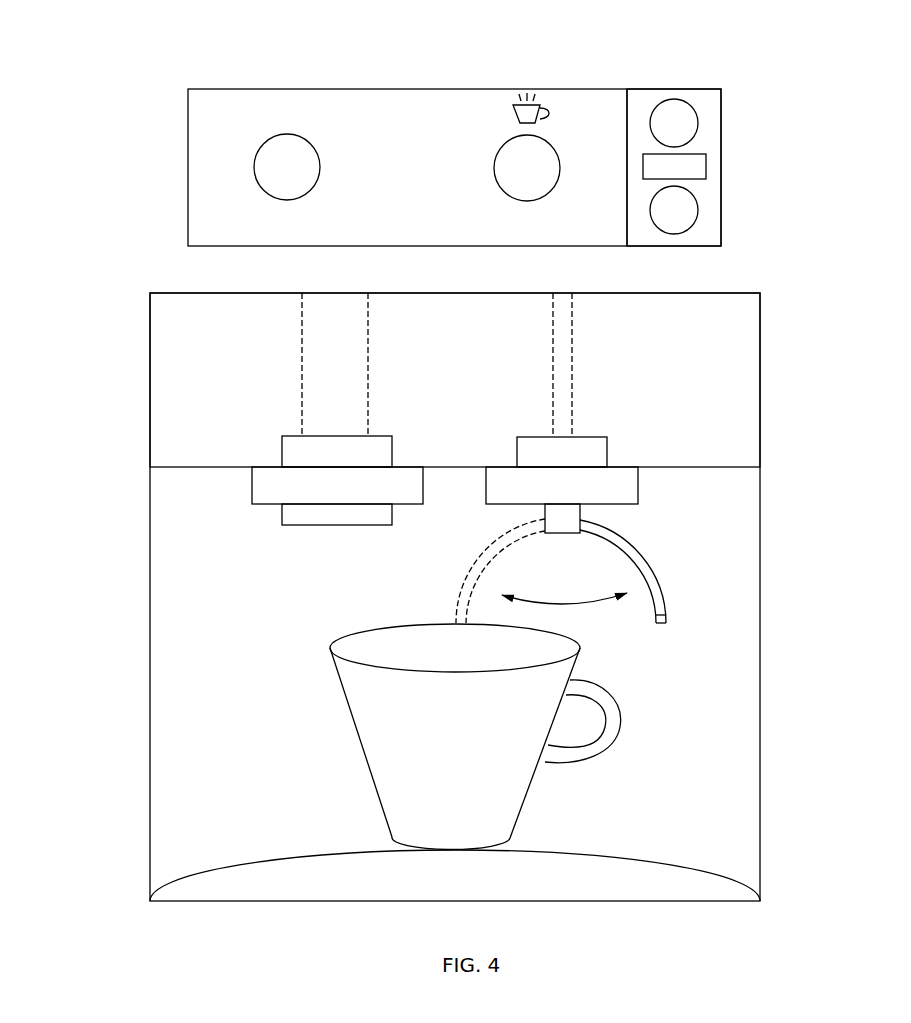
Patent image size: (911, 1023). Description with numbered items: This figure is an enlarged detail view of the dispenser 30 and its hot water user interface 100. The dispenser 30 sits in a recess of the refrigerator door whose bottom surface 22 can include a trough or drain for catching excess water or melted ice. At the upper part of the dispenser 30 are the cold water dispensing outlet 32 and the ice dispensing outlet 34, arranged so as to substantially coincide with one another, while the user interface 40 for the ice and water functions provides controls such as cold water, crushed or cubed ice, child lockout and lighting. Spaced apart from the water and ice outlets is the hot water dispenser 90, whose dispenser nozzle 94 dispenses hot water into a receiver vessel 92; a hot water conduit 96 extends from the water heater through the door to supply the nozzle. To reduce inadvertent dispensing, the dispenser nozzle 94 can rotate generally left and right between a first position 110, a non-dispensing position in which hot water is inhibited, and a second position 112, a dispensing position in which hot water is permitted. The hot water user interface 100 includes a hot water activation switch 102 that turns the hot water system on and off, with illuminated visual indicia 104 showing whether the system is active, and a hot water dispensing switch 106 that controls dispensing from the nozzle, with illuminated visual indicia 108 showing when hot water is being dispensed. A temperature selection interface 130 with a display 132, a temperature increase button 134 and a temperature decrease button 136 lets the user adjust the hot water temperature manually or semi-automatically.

The bottom surface 22 is at (277, 880).
The dispenser 30 is at (125, 651).
The water dispensing outlet 32 is at (297, 515).
The ice dispensing outlet 34 is at (278, 488).
The user interface 40 is at (172, 370).
The hot water dispenser 90 is at (627, 479).
The receiver vessel 92 is at (385, 735).
The dispenser nozzle 94 is at (662, 615).
The hot water conduit 96 is at (563, 362).
The hot water user interface 100 is at (207, 143).
The hot water activation switch 102 is at (305, 180).
The illuminated visual indicia 104 is at (336, 121).
The hot water dispensing switch 106 is at (513, 158).
The illuminated visual indicia 108 is at (453, 229).
The first position 110 is at (677, 567).
The second position 112 is at (453, 588).
The temperature selection interface 130 is at (707, 98).
The display 132 is at (688, 168).
The temperature increase button 134 is at (683, 124).
The temperature decrease button 136 is at (680, 215).